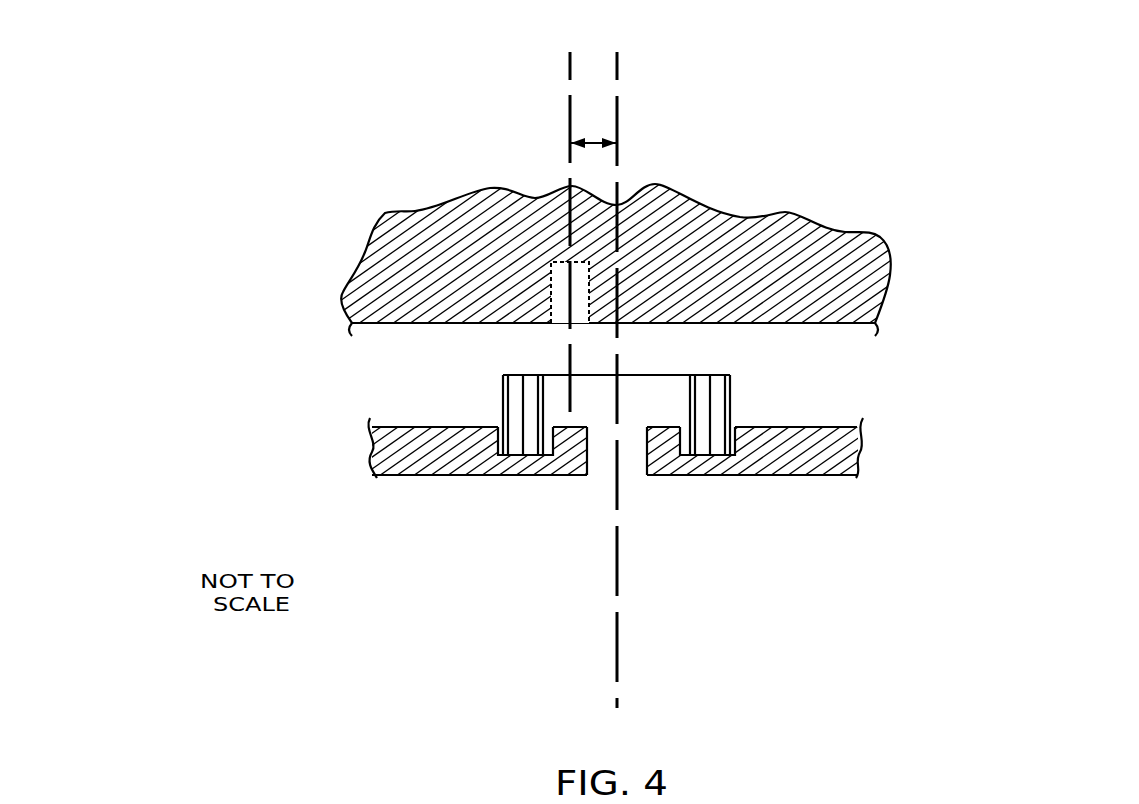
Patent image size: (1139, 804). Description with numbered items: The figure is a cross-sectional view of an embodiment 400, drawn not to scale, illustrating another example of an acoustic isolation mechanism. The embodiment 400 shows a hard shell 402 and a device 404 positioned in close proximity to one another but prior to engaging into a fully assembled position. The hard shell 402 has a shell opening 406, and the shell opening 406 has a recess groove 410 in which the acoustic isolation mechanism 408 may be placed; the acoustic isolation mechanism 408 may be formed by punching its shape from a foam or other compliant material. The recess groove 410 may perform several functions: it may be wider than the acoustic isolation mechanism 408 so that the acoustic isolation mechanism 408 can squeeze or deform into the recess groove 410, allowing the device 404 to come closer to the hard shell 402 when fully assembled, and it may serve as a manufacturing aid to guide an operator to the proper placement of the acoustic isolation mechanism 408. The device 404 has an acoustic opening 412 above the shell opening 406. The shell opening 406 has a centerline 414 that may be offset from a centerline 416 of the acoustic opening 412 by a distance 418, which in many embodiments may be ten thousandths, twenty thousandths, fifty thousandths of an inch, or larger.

The embodiment 400 is at (859, 184).
The hard shell 402 is at (828, 475).
The device 404 is at (888, 277).
The shell opening 406 is at (604, 475).
The acoustic isolation mechanism 408 is at (730, 395).
The recess groove 410 is at (705, 470).
The acoustic opening 412 is at (560, 330).
The centerline 414 is at (616, 681).
The centerline 416 is at (570, 90).
The distance 418 is at (592, 140).